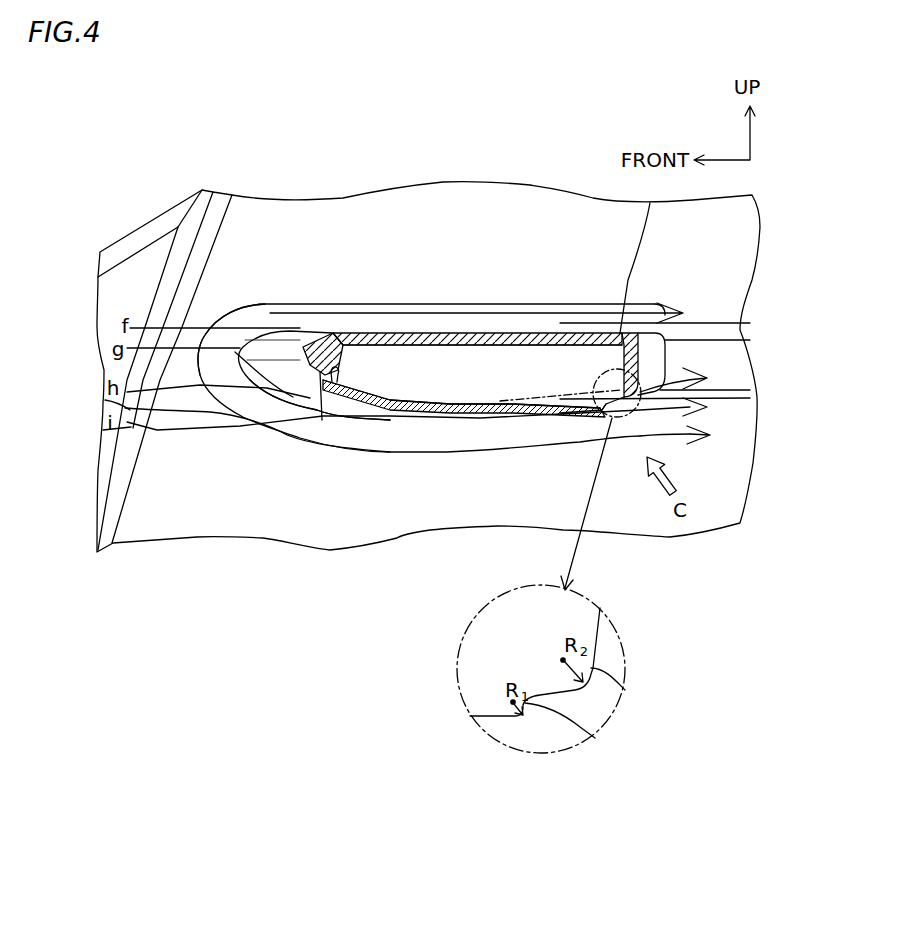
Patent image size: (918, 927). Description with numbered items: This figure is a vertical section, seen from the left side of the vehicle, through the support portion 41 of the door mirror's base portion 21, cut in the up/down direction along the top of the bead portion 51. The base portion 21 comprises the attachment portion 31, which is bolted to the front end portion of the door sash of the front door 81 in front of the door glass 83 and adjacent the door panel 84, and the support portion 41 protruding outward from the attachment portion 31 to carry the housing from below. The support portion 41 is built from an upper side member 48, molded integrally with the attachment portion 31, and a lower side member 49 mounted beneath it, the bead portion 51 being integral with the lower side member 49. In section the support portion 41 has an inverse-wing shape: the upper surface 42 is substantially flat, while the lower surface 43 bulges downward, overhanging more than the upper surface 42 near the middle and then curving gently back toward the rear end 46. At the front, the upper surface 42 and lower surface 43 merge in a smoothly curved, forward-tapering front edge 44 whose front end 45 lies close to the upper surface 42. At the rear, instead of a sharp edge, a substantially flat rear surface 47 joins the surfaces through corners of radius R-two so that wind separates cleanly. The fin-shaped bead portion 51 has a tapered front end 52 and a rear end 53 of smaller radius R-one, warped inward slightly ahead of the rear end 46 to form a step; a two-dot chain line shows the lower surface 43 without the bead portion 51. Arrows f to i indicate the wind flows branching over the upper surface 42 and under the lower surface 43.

The base portion 21 is at (518, 322).
The attachment portion 31 is at (340, 217).
The support portion 41 is at (371, 322).
The upper surface 42 is at (468, 331).
The lower surface 43 is at (463, 414).
The front edge 44 is at (327, 322).
The front end 45 is at (277, 322).
The rear end 46 is at (612, 333).
The rear surface 47 is at (652, 362).
The upper side member 48 is at (403, 331).
The lower side member 49 is at (405, 420).
The bead portion 51 is at (575, 410).
The front end 52 is at (507, 414).
The rear end 53 is at (604, 410).
The front door 81 is at (120, 488).
The door glass 83 is at (740, 243).
The door panel 84 is at (735, 468).